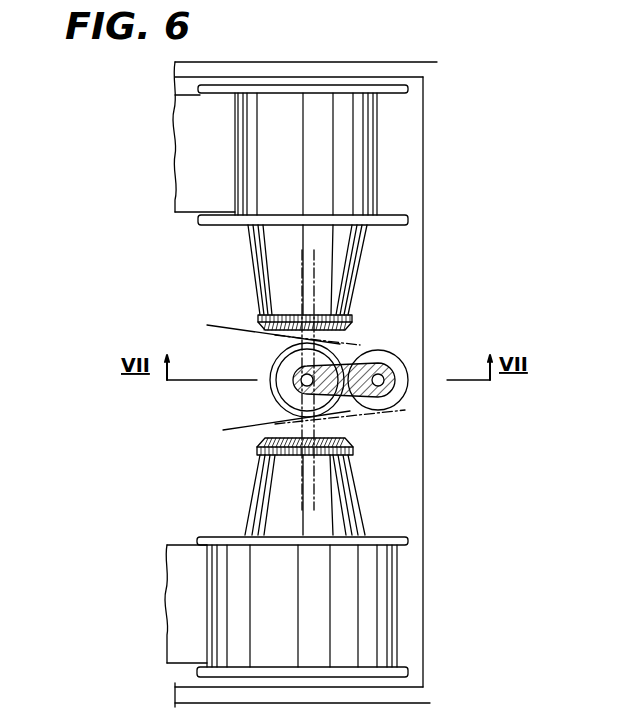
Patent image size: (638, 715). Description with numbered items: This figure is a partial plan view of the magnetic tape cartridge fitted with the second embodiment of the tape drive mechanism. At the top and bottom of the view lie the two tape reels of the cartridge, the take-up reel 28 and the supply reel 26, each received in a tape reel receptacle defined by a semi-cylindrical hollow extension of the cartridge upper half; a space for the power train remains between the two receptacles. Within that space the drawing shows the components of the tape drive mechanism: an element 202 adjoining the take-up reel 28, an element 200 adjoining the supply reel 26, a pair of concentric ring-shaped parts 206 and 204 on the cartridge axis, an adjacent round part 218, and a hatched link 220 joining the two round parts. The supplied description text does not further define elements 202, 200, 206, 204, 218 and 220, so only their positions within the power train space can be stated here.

The take-up reel 28 is at (392, 97).
The supply reel 26 is at (393, 545).
The upper conical guide 202 is at (346, 326).
The lower conical guide 200 is at (350, 455).
The outer bearing ring 206 is at (274, 350).
The inner bearing ring 204 is at (277, 393).
The eccentric pulley 218 is at (356, 368).
The link 220 is at (392, 388).